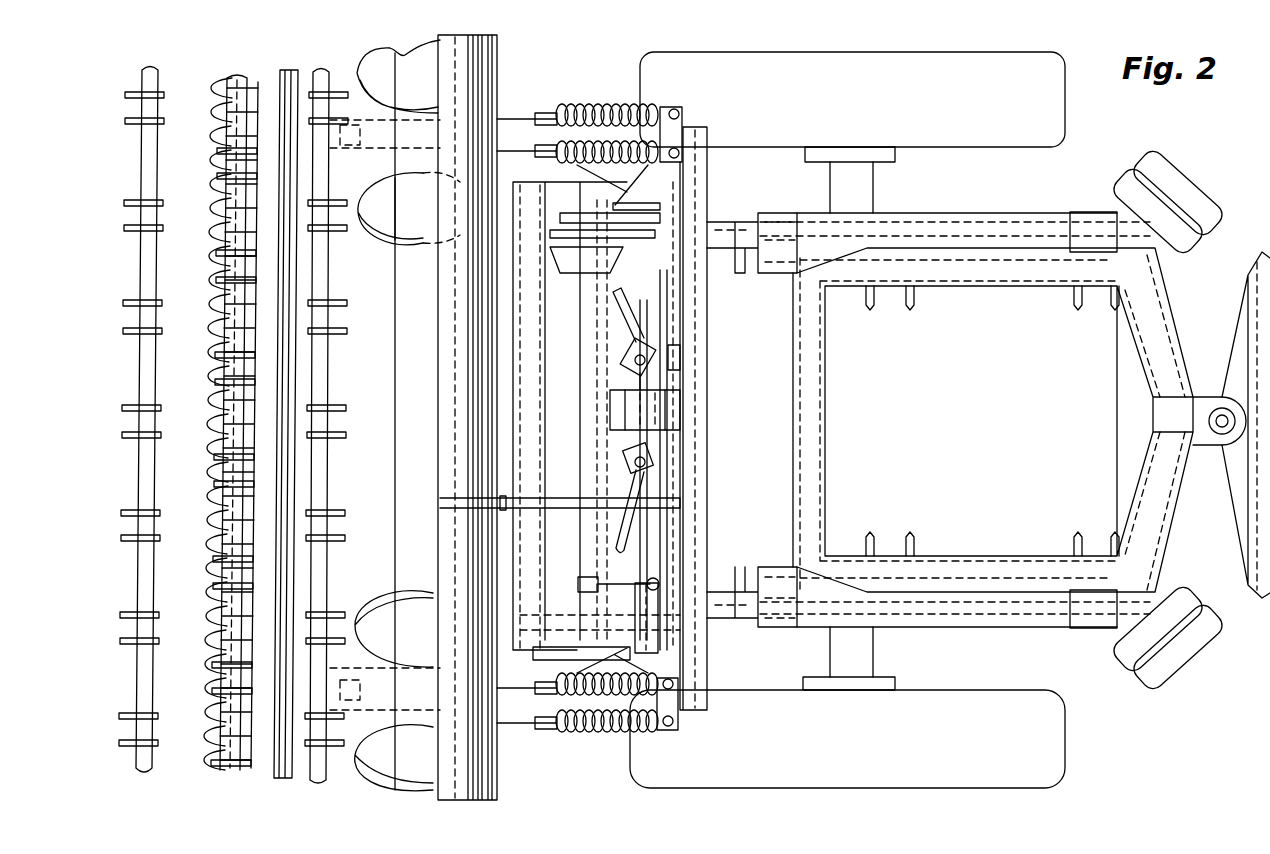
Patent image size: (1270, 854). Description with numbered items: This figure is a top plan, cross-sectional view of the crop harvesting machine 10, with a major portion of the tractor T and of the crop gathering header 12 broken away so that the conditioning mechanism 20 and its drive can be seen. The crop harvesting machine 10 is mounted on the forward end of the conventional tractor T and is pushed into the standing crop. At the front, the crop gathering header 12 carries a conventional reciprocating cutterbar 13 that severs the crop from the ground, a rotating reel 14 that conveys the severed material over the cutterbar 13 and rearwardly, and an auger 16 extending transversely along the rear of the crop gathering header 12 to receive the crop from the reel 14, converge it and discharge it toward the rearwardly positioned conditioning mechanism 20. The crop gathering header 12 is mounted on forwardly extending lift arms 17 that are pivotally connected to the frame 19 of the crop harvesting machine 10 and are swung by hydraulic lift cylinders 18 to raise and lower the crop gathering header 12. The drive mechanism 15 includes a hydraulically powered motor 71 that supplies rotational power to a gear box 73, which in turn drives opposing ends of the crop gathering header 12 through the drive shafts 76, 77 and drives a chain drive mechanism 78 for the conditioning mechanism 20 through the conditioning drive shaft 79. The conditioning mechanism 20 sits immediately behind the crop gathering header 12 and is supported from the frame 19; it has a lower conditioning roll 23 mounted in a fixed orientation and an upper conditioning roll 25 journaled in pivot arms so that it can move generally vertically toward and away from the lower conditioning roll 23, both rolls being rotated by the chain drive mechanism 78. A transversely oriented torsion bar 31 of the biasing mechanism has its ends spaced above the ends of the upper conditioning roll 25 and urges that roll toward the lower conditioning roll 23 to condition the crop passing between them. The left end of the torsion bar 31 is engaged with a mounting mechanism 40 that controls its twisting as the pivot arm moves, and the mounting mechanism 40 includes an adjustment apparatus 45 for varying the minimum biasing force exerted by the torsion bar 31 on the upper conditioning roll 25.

The crop harvesting machine 10 is at (586, 72).
The crop gathering header 12 is at (437, 33).
The reciprocating cutterbar 13 is at (213, 255).
The rotating reel 14 is at (140, 665).
The drive mechanism 15 is at (725, 410).
The auger 16 is at (357, 63).
The lift arms 17 is at (517, 127).
The hydraulic lift cylinders 18 is at (742, 248).
The frame 19 is at (705, 140).
The conditioning mechanism 20 is at (532, 672).
The lower conditioning roll 23 is at (655, 222).
The upper conditioning roll 25 is at (592, 268).
The torsion bar 31 is at (650, 310).
The mounting mechanism 40 is at (667, 650).
The adjustment apparatus 45 is at (587, 577).
The hydraulically powered motor 71 is at (667, 484).
The gear box 73 is at (623, 393).
The drive shaft 76 is at (613, 307).
The drive shaft 77 is at (613, 530).
The chain drive mechanism 78 is at (640, 205).
The conditioning drive shaft 79 is at (680, 357).
The tractor T is at (1135, 367).